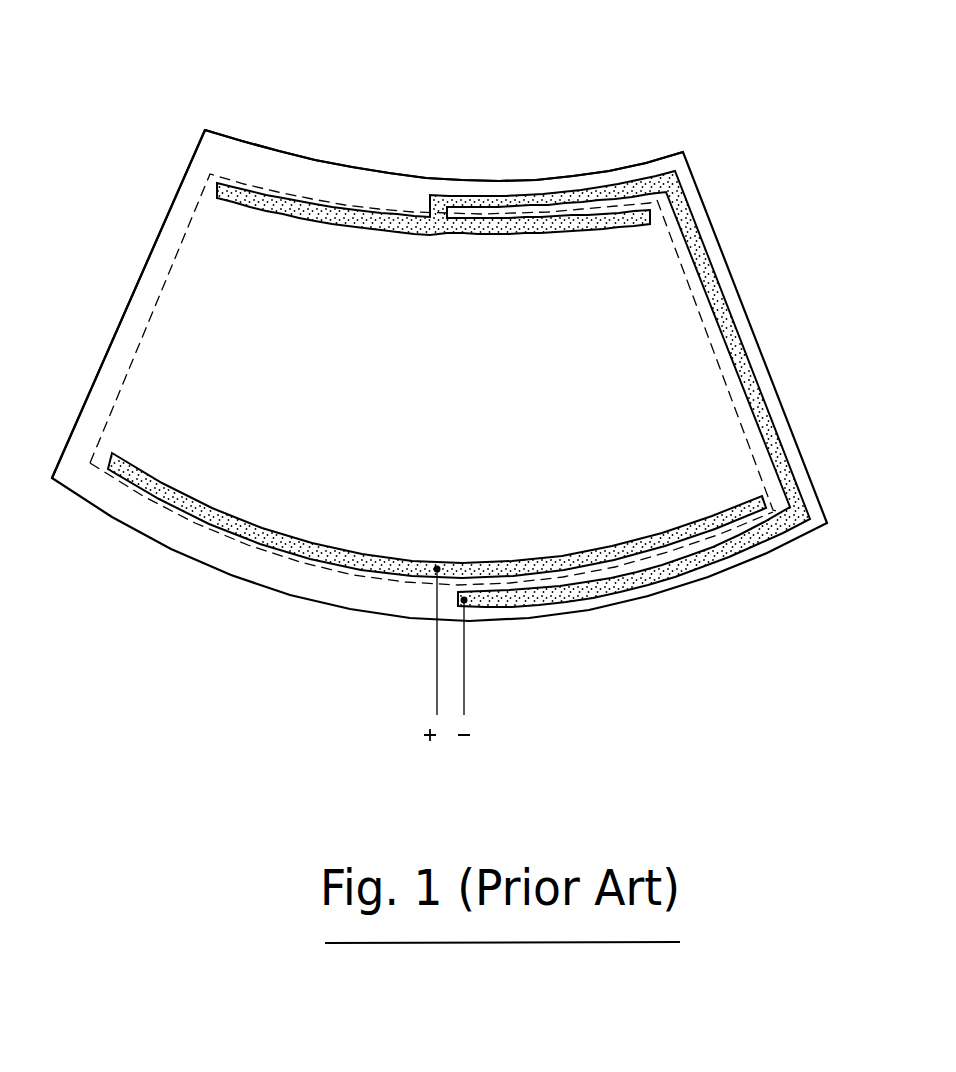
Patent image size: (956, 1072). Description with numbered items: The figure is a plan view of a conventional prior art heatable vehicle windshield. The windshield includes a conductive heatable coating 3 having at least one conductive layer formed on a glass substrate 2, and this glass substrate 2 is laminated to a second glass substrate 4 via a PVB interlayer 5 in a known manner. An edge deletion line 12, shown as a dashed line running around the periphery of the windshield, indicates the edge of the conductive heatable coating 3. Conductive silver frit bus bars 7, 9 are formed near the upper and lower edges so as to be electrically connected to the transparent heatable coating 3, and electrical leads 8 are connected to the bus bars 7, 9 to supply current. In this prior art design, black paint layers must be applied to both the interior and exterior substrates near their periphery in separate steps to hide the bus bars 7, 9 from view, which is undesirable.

The glass substrate 2 is at (428, 375).
The glass substrate 4 is at (220, 393).
The conductive coating 3 is at (228, 332).
The PVB interlayer 5 is at (263, 280).
The bus bar 7 is at (283, 203).
The electrical leads 8 is at (465, 681).
The bus bar 9 is at (276, 547).
The edge deletion line 12 is at (183, 226).